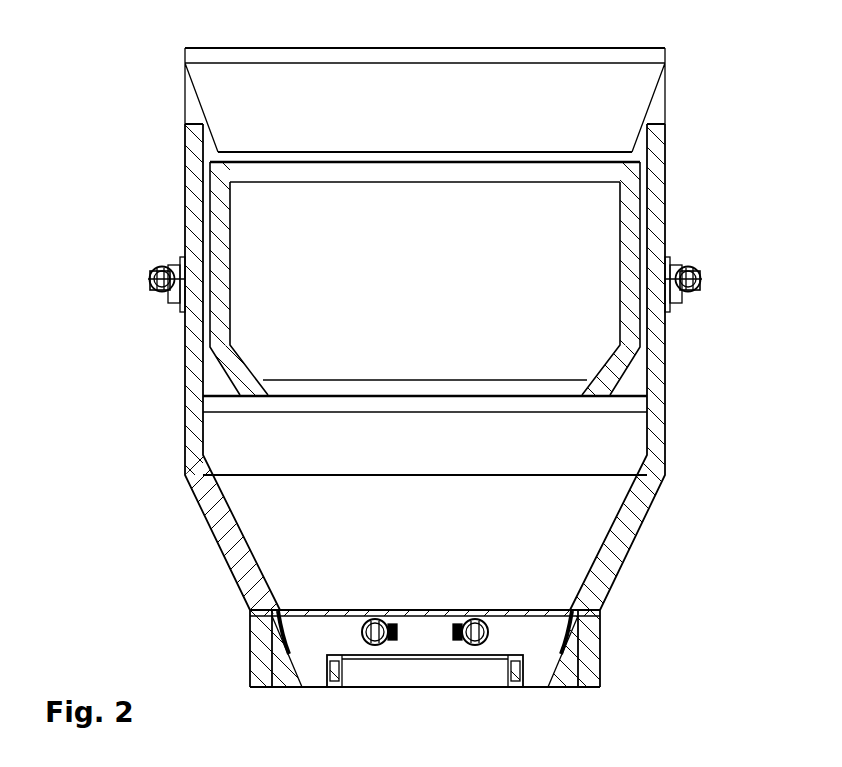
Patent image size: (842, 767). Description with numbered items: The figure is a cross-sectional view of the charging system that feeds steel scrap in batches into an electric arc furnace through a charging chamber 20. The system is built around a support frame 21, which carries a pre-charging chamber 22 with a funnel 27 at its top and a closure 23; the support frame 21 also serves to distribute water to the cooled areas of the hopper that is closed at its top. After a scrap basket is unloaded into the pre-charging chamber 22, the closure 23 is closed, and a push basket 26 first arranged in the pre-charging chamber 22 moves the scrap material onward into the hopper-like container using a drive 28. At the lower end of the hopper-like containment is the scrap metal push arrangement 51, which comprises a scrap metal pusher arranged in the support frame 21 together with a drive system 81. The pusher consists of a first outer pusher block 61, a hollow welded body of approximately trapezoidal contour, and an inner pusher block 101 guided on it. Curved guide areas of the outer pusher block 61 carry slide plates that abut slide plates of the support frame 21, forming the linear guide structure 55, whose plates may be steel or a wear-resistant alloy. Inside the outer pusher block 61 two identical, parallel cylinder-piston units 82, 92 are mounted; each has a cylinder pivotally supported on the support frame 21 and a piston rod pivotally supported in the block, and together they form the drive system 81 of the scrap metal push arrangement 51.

The charging chamber 20 is at (168, 383).
The support frame 21 is at (194, 183).
The pre-charging chamber 22 is at (297, 228).
The closure 23 is at (197, 55).
The push basket 26 is at (225, 324).
The funnel 27 is at (276, 97).
The drive 28 is at (152, 280).
The scrap metal push arrangement 51 is at (298, 638).
The linear guide structure 55 is at (270, 637).
The outer pusher block 61 is at (540, 659).
The drive system 81 is at (352, 632).
The cylinder-piston unit 82 is at (362, 624).
The cylinder-piston unit 92 is at (486, 626).
The inner pusher block 101 is at (473, 673).